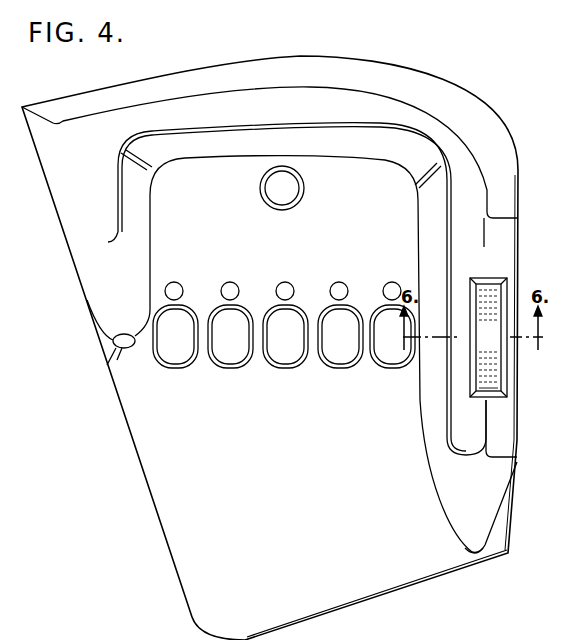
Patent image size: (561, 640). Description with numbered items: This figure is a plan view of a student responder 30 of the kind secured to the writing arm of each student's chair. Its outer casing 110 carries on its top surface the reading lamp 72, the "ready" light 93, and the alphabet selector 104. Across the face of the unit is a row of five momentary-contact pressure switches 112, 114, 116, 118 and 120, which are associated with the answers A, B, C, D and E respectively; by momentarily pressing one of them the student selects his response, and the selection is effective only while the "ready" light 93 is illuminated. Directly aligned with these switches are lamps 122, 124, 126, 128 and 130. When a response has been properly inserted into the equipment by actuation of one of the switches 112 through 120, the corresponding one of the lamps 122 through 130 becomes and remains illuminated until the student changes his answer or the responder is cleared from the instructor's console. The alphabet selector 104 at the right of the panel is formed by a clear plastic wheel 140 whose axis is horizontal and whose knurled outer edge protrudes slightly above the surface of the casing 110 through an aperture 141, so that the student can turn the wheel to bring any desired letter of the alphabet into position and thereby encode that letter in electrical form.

The control panel housing 30 is at (393, 71).
The outer casing 110 is at (482, 110).
The "ready" light 93 is at (299, 204).
The reading lamp 72 is at (112, 352).
The lamp 122 is at (172, 283).
The lamp 124 is at (228, 283).
The lamp 126 is at (283, 283).
The lamp 128 is at (337, 283).
The lamp 130 is at (390, 283).
The momentary-contact pressure switch 112 is at (173, 360).
The momentary-contact pressure switch 114 is at (230, 360).
The momentary-contact pressure switch 116 is at (286, 360).
The momentary-contact pressure switch 118 is at (350, 355).
The momentary-contact pressure switch 120 is at (398, 357).
The clear plastic wheel 140 is at (487, 287).
The alphabet selector 104 is at (497, 291).
The aperture 141 is at (493, 373).